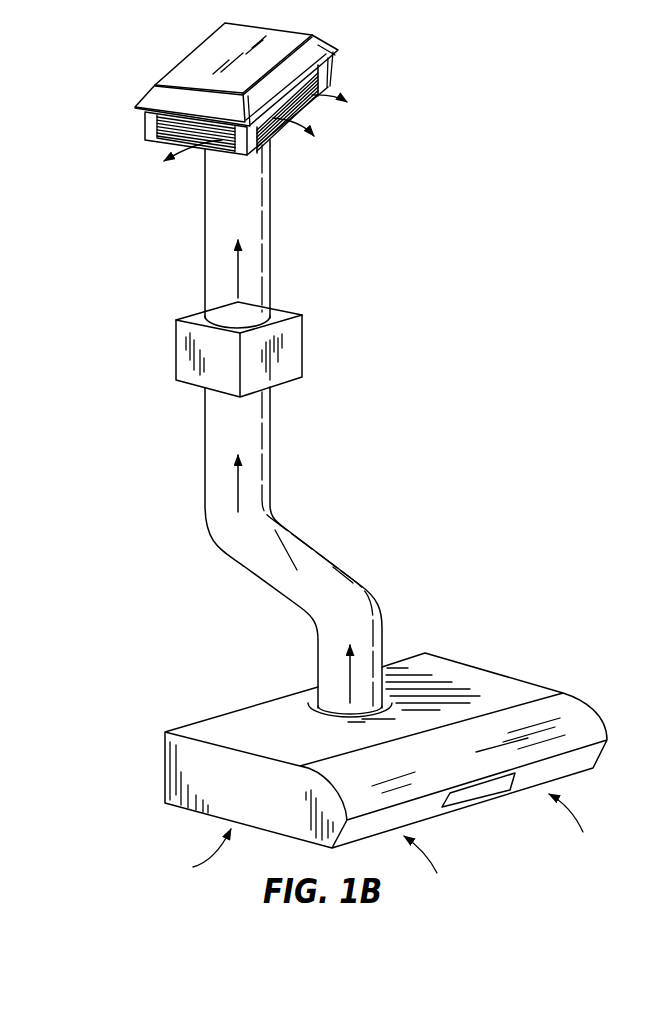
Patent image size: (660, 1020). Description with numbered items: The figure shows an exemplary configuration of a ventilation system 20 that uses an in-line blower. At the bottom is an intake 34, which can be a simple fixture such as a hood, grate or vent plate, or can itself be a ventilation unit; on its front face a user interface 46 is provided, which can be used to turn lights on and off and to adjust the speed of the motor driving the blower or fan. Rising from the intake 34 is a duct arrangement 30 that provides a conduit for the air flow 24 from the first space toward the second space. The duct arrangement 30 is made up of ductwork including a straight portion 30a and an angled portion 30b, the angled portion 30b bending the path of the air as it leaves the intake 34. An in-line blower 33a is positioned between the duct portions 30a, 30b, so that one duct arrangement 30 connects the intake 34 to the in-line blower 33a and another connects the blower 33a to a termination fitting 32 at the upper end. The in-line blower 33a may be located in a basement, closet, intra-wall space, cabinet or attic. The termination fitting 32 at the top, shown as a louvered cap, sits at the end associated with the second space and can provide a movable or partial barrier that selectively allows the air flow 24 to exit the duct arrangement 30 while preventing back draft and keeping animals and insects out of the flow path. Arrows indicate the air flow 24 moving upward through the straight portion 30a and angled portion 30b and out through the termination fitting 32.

The ventilation system 20 is at (430, 241).
The air flow 24 is at (240, 263).
The duct arrangement 30 is at (127, 142).
The straight portion 30a is at (225, 197).
The angled portion 30b is at (217, 547).
The termination fitting 32 is at (188, 72).
The in-line blower 33a is at (285, 356).
The intake 34 is at (205, 762).
The user interface 46 is at (478, 792).